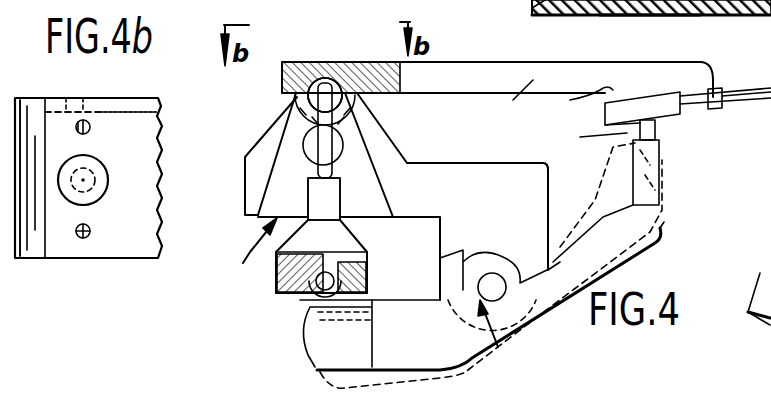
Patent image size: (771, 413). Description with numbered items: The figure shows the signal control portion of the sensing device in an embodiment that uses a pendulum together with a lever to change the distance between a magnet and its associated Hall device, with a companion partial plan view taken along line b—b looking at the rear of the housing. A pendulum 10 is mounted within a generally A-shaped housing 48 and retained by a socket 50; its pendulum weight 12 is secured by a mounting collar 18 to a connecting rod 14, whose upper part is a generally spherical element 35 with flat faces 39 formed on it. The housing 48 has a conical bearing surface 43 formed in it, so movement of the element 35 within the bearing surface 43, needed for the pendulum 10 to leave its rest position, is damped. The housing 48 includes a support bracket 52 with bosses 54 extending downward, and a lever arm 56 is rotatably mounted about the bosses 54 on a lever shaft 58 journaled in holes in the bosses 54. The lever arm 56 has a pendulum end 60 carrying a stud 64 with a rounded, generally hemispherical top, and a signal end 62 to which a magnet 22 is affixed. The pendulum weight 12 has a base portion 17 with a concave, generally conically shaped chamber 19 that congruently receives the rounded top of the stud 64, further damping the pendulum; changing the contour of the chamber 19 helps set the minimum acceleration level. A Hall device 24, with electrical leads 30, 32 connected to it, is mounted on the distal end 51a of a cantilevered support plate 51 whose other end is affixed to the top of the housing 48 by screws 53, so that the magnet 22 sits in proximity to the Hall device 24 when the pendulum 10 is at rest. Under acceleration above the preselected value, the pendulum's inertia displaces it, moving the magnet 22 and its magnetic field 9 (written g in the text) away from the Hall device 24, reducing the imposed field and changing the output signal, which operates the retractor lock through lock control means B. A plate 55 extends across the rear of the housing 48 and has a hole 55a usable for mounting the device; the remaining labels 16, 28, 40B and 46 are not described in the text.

In FIG. 4, the magnetic field 9 is at (610, 130).
In FIG. 4, the pendulum 10 is at (252, 260).
In FIG. 4, the pendulum weight 12 is at (350, 247).
In FIG. 4, the connecting rod 14 is at (352, 118).
In FIG. 4, the base 16 is at (300, 290).
In FIG. 4, the base portion 17 is at (307, 296).
In FIG. 4, the mounting collar 18 is at (370, 160).
In FIG. 4, the chamber 19 is at (367, 297).
In FIG. 4, the magnet 22 is at (660, 172).
In FIG. 4, the Hall device 24 is at (648, 108).
In FIG. 4, the collar 28 is at (715, 110).
In FIG. 4, the electrical lead 30 is at (762, 90).
In FIG. 4, the electrical lead 32 is at (750, 100).
In FIG. 4, the spherical element 35 is at (298, 90).
In FIG. 4, the flat faces 39 is at (335, 84).
In FIG. 4, the belt section 40B is at (762, 45).
In FIG. 4, the bearing surface 43 is at (497, 87).
In FIG. 4, the belt end 46 is at (532, 5).
In FIG. 4B, the housing 48 is at (30, 114).
In FIG. 4, the housing 48 is at (285, 108).
In FIG. 4B, the socket 50 is at (108, 180).
In FIG. 4, the socket 50 is at (325, 76).
In FIG. 4B, the support plate 51 is at (72, 246).
In FIG. 4, the support plate 51 is at (509, 99).
In FIG. 4, the distal end 51a is at (570, 105).
In FIG. 4, the support bracket 52 is at (498, 170).
In FIG. 4B, the screws 53 is at (90, 127).
In FIG. 4, the bosses 54 is at (550, 233).
In FIG. 4B, the plate 55 is at (158, 101).
In FIG. 4, the plate 55 is at (355, 176).
In FIG. 4B, the hole 55a is at (87, 104).
In FIG. 4, the hole 55a is at (353, 108).
In FIG. 4, the lever arm 56 is at (503, 348).
In FIG. 4, the lever shaft 58 is at (497, 275).
In FIG. 4, the pendulum end 60 is at (327, 347).
In FIG. 4, the signal end 62 is at (660, 238).
In FIG. 4, the stud 64 is at (330, 283).
In FIG. 4, the lock control means B is at (663, 12).